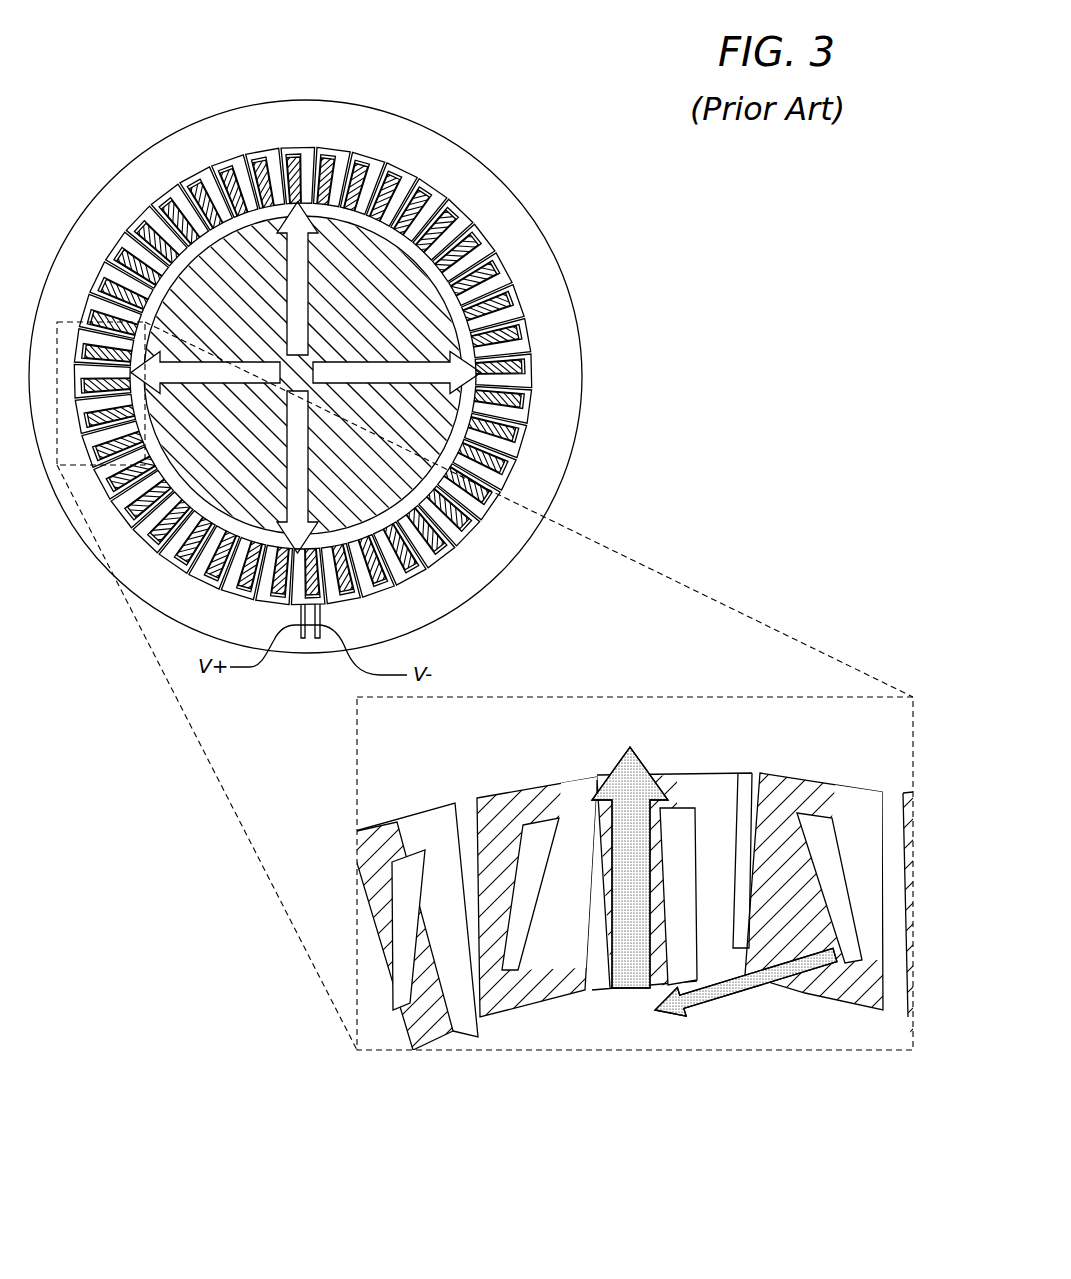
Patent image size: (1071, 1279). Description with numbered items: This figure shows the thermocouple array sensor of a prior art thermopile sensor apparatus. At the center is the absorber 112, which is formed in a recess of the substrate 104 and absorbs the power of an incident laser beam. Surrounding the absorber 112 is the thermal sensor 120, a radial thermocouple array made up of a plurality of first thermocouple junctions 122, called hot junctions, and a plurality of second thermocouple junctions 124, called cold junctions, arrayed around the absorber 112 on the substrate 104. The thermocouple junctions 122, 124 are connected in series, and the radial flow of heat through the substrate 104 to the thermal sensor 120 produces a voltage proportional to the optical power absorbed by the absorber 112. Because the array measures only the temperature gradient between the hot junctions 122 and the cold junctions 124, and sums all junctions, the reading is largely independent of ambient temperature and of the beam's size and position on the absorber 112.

The substrate 104 is at (203, 122).
The absorber 112 is at (433, 282).
The thermal sensor 120 is at (380, 158).
The first thermocouple junctions 122 is at (838, 1015).
The second thermocouple junctions 124 is at (527, 758).